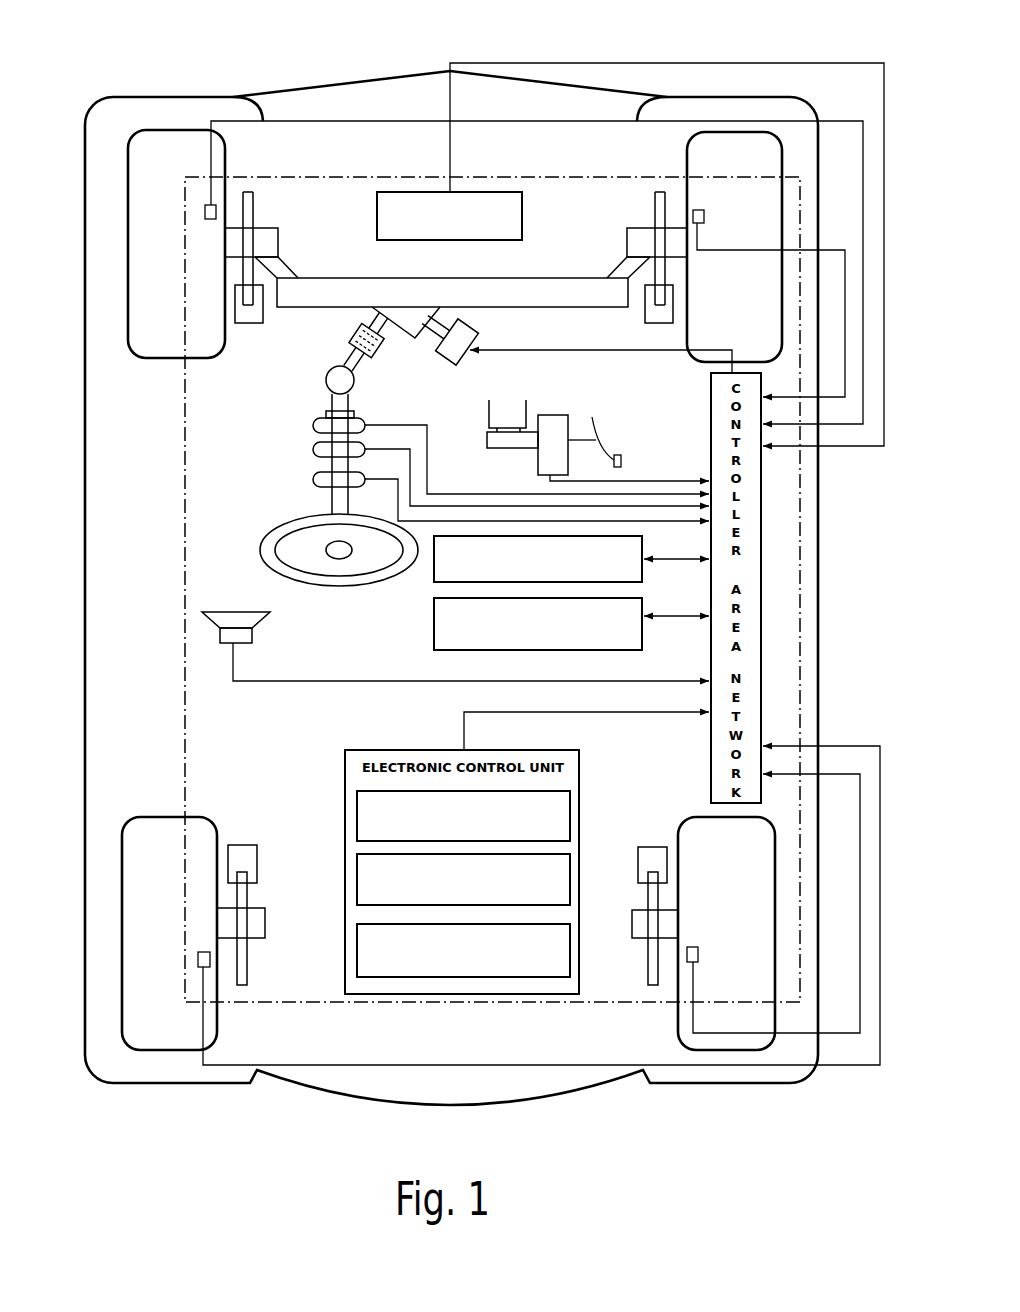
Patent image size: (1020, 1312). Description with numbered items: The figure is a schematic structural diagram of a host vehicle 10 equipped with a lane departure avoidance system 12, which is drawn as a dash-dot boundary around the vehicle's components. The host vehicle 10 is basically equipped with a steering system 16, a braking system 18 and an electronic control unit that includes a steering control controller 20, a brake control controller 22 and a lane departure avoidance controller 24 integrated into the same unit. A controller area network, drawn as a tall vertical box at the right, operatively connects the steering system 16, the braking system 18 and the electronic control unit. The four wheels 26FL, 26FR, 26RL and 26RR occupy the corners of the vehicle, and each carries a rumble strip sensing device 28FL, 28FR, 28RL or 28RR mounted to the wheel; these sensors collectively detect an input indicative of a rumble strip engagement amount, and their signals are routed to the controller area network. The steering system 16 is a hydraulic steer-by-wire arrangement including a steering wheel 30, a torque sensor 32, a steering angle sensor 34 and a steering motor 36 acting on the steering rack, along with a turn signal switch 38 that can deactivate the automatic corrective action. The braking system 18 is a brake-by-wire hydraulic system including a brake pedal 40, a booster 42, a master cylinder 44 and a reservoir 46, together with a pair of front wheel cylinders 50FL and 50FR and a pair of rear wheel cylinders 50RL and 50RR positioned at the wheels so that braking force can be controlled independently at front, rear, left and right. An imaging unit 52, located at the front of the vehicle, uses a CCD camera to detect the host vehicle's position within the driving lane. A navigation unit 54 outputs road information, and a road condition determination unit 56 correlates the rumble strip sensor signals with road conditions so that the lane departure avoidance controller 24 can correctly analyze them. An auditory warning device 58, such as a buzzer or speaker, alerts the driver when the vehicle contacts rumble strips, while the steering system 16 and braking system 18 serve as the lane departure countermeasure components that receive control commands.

The host vehicle 10 is at (206, 72).
The lane departure avoidance system 12 is at (181, 514).
The steering system 16 is at (440, 433).
The braking system 18 is at (574, 421).
The steering control controller 20 is at (357, 816).
The brake control controller 22 is at (357, 878).
The lane departure avoidance controller 24 is at (357, 950).
The front left wheel 26FL is at (226, 162).
The front right wheel 26FR is at (673, 177).
The rear left wheel 26RL is at (218, 1020).
The rear right wheel 26RR is at (678, 1015).
The rumble strip sensing device 28FL is at (209, 205).
The rumble strip sensing device 28FR is at (699, 210).
The rumble strip sensing device 28RL is at (200, 952).
The rumble strip sensing device 28RR is at (698, 948).
The steering wheel 30 is at (262, 553).
The torque sensor 32 is at (313, 480).
The steering angle sensor 34 is at (315, 449).
The steering motor 36 is at (440, 356).
The turn signal switch 38 is at (315, 425).
The brake pedal 40 is at (622, 460).
The booster 42 is at (558, 415).
The master cylinder 44 is at (487, 440).
The reservoir 46 is at (489, 408).
The front wheel cylinder 50FL is at (250, 323).
The front wheel cylinder 50FR is at (645, 312).
The rear wheel cylinder 50RL is at (240, 845).
The rear wheel cylinder 50RR is at (652, 847).
The imaging unit 52 is at (377, 216).
The navigation unit 54 is at (434, 578).
The road condition determination unit 56 is at (434, 632).
The auditory warning device 58 is at (215, 623).